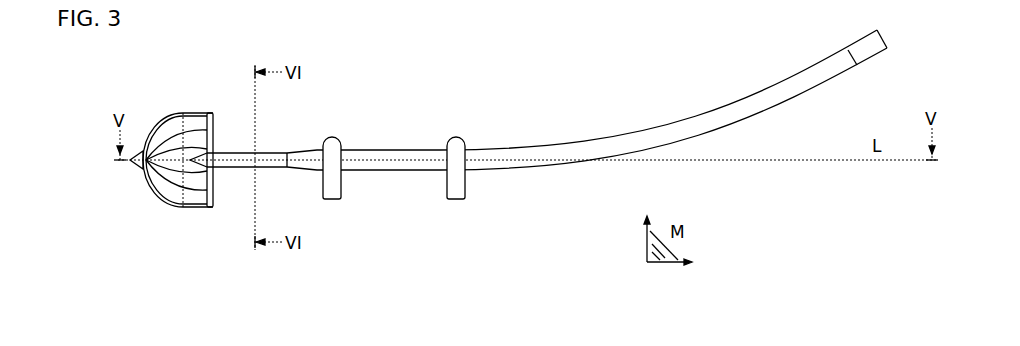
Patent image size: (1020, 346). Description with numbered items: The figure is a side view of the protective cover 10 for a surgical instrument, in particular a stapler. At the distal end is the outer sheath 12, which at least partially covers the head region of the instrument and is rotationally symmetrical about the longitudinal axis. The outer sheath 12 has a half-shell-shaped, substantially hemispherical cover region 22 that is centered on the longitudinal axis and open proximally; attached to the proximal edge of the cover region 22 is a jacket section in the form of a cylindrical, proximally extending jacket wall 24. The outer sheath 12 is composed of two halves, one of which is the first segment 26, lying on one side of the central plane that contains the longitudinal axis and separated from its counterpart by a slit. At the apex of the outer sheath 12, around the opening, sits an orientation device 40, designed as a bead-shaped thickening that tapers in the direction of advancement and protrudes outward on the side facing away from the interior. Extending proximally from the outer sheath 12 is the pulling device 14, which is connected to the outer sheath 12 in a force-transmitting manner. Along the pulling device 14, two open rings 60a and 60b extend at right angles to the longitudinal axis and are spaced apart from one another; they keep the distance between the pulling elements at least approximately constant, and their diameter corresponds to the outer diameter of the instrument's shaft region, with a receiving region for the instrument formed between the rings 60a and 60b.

The protective cover 10 is at (520, 200).
The outer sheath 12 is at (178, 215).
The pulling device 14 is at (718, 100).
The cover region 22 is at (157, 112).
The jacket wall 24 is at (197, 112).
The first segment 26 is at (175, 188).
The orientation device 40 is at (135, 168).
The open ring 60a is at (335, 135).
The open ring 60b is at (460, 133).